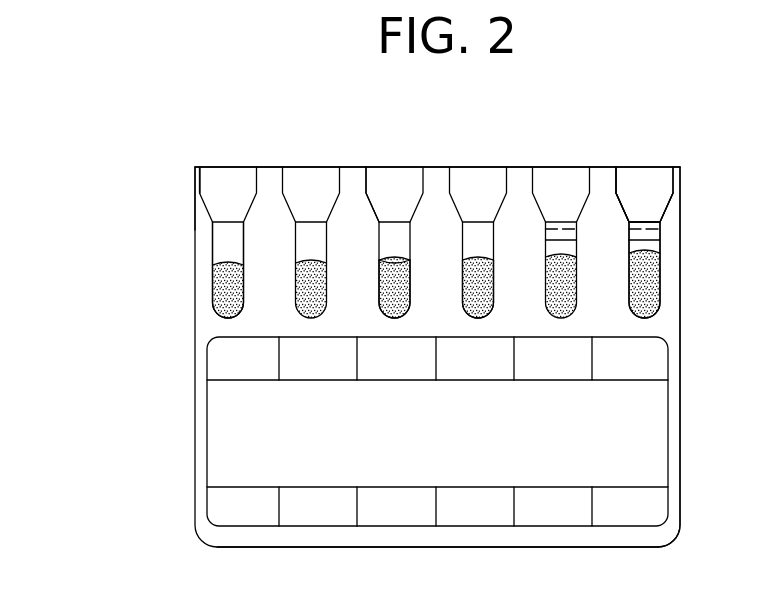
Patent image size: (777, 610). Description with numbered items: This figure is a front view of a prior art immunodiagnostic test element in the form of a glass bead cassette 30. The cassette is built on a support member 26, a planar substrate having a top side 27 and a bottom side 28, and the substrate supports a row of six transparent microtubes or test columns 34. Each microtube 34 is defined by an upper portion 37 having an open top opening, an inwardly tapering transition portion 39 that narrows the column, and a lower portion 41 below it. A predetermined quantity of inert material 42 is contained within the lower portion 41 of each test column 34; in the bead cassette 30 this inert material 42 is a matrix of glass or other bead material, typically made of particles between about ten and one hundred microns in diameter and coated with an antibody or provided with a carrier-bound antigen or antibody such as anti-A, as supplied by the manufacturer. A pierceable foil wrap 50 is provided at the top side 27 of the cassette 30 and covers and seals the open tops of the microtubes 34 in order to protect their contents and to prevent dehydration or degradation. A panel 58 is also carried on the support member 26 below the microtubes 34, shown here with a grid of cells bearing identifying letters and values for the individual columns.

The support member 26 is at (681, 317).
The top side 27 is at (433, 166).
The bottom side 28 is at (313, 547).
The glass bead cassette 30 is at (275, 146).
The microtube 34 is at (657, 200).
The upper portion 37 is at (366, 179).
The inwardly tapering transition portion 39 is at (622, 207).
The lower portion 41 is at (217, 244).
The bead matrix 42 is at (410, 268).
The foil wrap 50 is at (207, 166).
The panel 58 is at (652, 434).